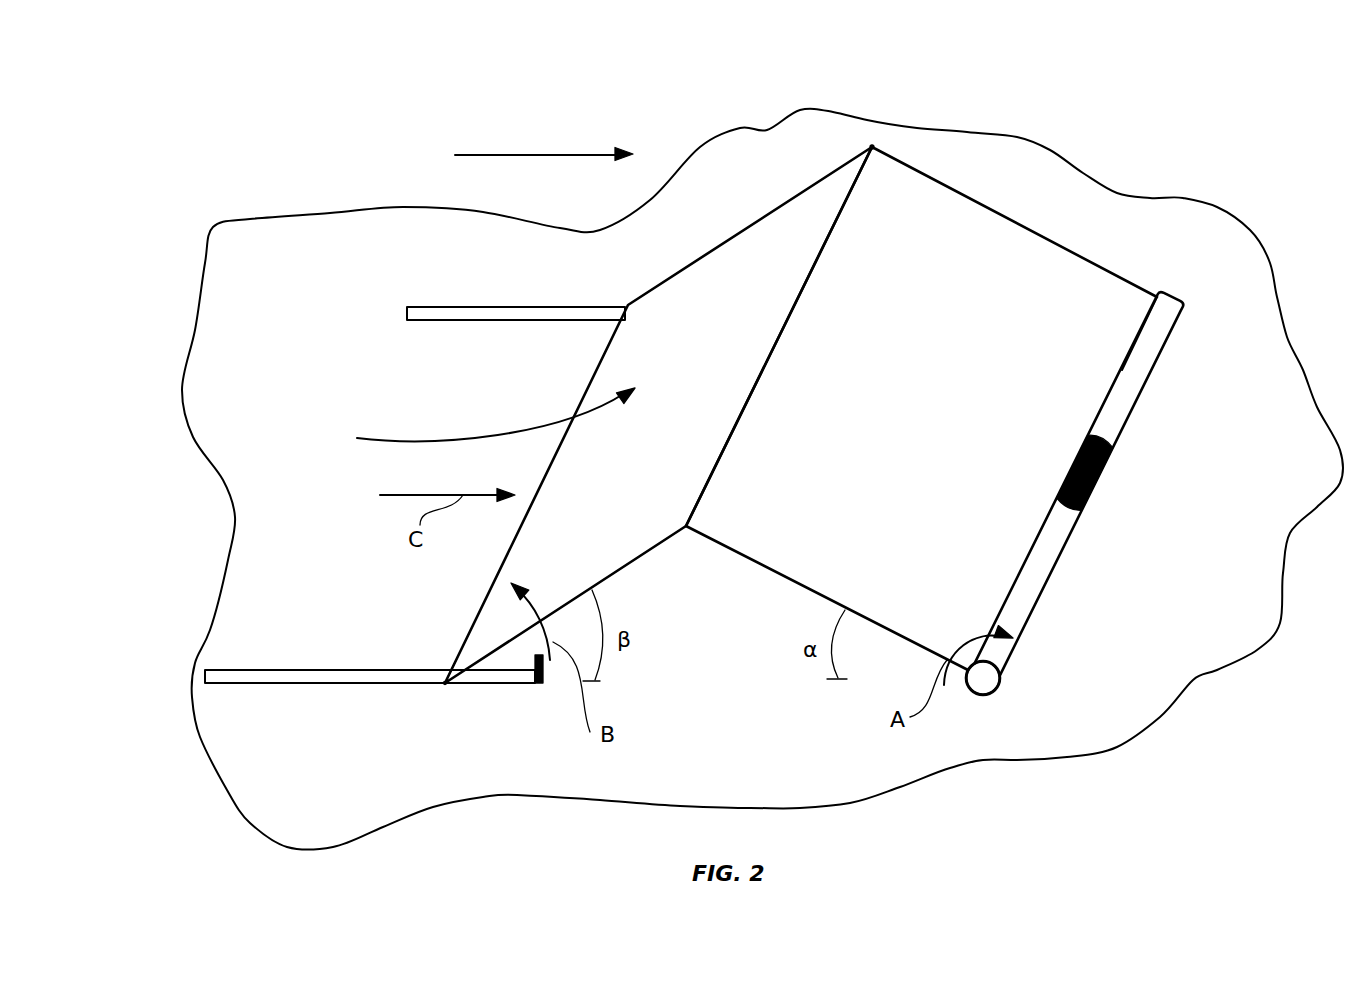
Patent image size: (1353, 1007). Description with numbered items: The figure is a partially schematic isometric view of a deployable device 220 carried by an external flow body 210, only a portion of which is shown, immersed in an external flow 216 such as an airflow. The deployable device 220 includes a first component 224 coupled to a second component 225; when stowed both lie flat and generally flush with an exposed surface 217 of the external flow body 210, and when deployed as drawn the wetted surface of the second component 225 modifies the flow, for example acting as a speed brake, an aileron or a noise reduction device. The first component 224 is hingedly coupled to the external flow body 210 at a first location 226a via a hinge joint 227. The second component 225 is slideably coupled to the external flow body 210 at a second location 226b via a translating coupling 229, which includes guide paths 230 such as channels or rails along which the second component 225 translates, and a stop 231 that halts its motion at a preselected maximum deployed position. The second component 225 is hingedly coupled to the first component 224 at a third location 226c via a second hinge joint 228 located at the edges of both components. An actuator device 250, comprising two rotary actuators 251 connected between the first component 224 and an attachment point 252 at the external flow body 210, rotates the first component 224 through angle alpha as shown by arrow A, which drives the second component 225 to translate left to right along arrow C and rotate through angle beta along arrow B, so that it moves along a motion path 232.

The external flow body 210 is at (724, 479).
The external flow 216 is at (482, 155).
The exposed surface 217 is at (215, 643).
The deployable device 220 is at (1090, 143).
The first component 224 is at (978, 495).
The second component 225 is at (570, 410).
The first location 226a is at (1013, 695).
The second location 226b is at (405, 710).
The third location 226c is at (895, 138).
The hinge joint 227 is at (972, 694).
The second hinge joint 228 is at (870, 112).
The translating coupling 229 is at (435, 628).
The guide paths 230 is at (482, 312).
The stop 231 is at (521, 683).
The motion path 232 is at (413, 440).
The actuator device 250 is at (1146, 484).
The rotary actuators 251 is at (1122, 397).
The attachment point 252 is at (1115, 463).